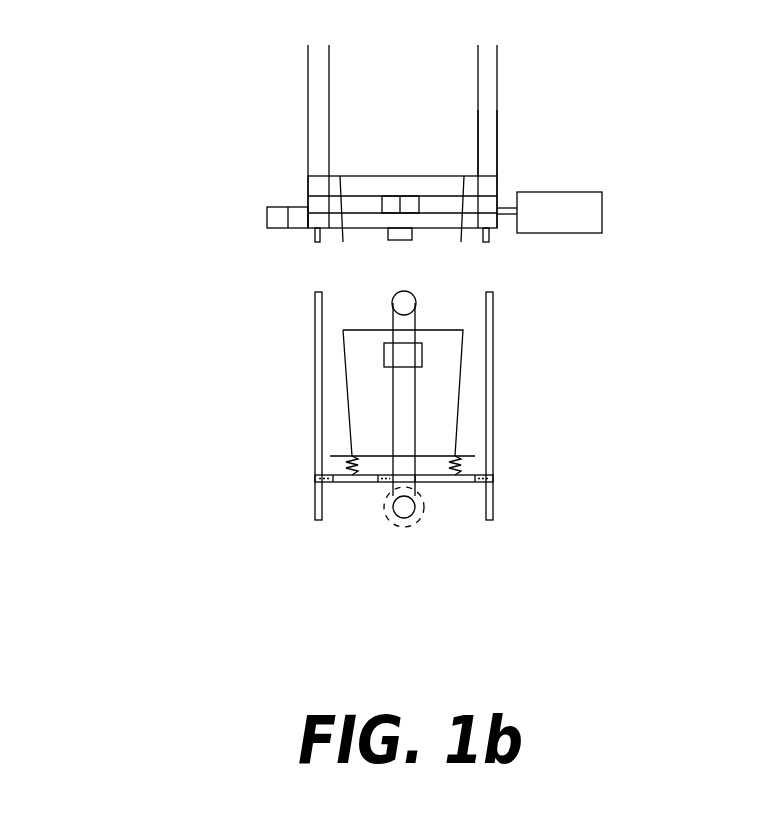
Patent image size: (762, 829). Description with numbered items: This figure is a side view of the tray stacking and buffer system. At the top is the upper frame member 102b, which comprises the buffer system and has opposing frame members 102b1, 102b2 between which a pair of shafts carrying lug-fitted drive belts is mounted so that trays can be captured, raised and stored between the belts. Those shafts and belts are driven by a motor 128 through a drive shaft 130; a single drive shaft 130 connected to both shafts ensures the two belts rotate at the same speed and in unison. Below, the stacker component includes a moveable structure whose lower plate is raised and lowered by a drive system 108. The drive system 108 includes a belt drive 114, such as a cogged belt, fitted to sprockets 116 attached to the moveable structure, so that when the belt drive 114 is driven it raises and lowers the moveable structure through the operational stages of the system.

The upper frame member 102b is at (497, 88).
The opposing frame member 102b1 is at (497, 143).
The opposing frame member 102b2 is at (307, 155).
The motor 128 is at (586, 206).
The drive shaft 130 is at (507, 218).
The sprocket 116 is at (395, 294).
The belt drive 114 is at (415, 410).
The drive system 108 is at (417, 520).